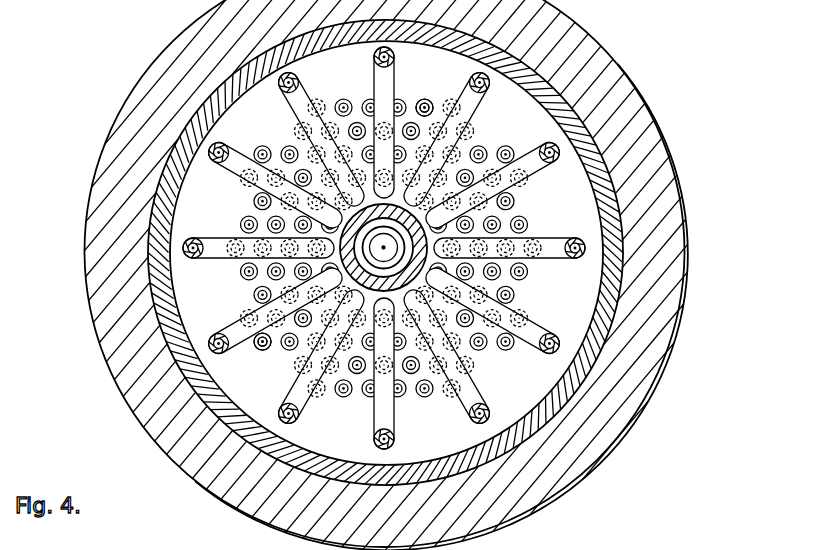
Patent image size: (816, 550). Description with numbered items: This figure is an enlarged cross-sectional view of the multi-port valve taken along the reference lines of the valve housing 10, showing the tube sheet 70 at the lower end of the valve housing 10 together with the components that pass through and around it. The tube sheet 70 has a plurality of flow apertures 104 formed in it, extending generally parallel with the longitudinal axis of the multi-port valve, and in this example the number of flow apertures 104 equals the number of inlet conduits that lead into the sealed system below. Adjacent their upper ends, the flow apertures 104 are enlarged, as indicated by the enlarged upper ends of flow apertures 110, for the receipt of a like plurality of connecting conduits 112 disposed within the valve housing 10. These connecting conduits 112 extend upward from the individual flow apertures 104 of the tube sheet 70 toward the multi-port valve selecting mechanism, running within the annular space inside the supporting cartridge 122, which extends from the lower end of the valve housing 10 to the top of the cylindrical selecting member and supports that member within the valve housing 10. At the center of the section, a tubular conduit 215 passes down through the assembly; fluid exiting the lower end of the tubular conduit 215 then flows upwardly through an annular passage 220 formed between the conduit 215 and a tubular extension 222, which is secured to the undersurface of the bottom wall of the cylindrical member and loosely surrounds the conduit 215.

The valve housing 10 is at (684, 232).
The tube sheet 70 is at (539, 123).
The flow apertures 104 is at (432, 101).
The enlarged upper ends of flow apertures 110 is at (424, 102).
The connecting conduits 112 is at (213, 262).
The supporting cartridge 122 is at (598, 294).
The tubular conduit 215 is at (383, 264).
The annular passage 220 is at (395, 267).
The tubular extension 222 is at (420, 273).